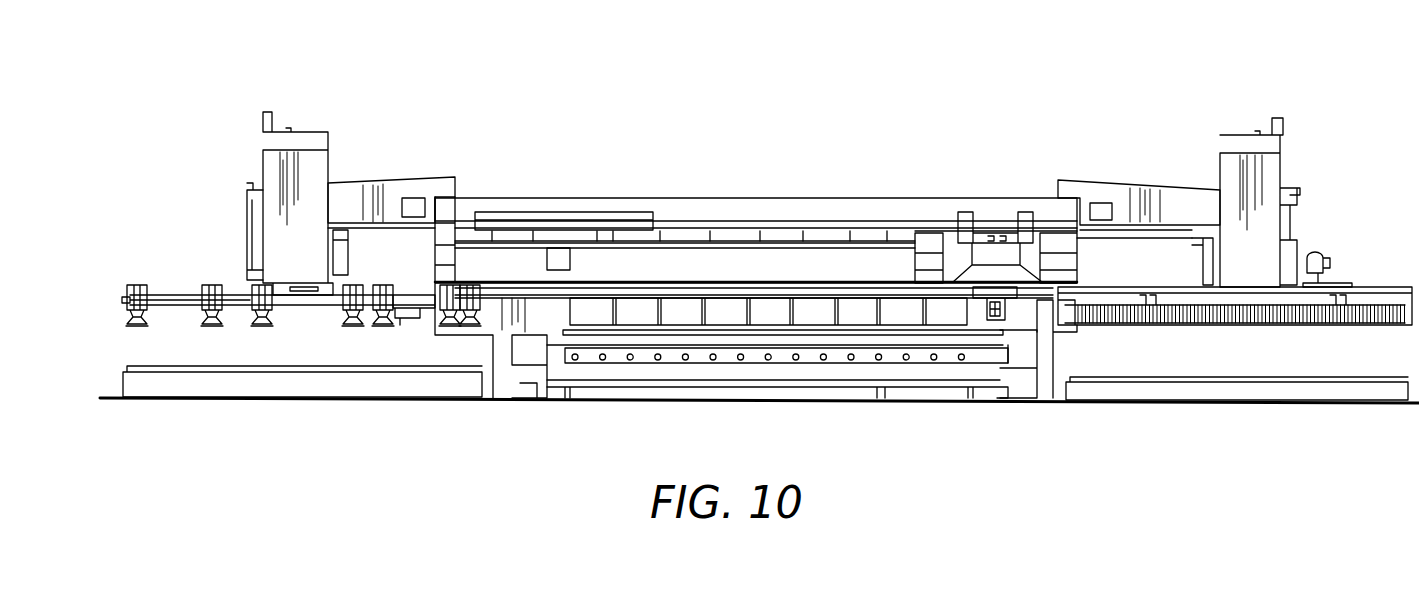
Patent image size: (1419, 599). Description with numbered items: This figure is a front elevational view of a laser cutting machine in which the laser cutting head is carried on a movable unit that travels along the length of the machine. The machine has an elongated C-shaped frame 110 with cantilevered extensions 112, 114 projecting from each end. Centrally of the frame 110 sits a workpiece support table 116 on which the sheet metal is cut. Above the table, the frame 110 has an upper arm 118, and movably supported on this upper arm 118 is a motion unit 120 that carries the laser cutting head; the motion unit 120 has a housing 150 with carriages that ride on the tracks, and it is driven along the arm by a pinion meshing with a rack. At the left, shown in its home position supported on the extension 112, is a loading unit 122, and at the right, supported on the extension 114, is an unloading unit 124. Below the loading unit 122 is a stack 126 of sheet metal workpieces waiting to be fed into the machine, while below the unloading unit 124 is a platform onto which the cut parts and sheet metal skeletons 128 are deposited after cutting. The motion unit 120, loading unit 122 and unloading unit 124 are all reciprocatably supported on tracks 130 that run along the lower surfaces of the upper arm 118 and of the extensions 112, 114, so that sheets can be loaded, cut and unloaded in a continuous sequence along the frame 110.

The C-shaped frame 110 is at (708, 198).
The cantilevered extension 112 is at (393, 183).
The cantilevered extension 114 is at (1147, 185).
The workpiece support table 116 is at (705, 383).
The upper arm 118 is at (795, 212).
The motion unit 120 is at (973, 219).
The loading unit 122 is at (331, 147).
The unloading unit 124 is at (1287, 149).
The stack of sheet metal workpieces 126 is at (310, 382).
The cut parts and sheet metal skeletons 128 is at (1284, 378).
The tracks 130 is at (663, 224).
The housing 150 is at (777, 318).